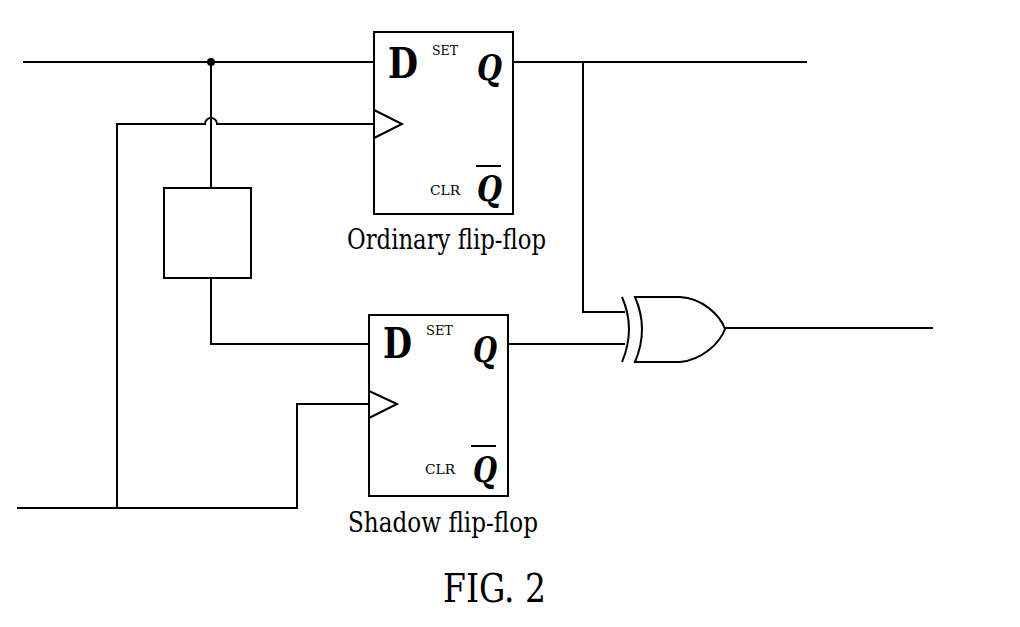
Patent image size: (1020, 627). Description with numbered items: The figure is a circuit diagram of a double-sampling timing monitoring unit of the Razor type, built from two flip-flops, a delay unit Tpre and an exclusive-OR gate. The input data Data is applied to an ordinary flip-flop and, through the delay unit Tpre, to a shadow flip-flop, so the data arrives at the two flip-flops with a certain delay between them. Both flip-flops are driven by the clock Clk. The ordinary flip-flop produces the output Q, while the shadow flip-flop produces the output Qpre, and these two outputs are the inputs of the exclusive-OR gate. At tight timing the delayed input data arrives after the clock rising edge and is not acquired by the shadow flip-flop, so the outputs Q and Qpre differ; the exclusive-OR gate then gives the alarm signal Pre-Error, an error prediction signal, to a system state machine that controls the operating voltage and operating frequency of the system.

The input data Data is at (198, 42).
The clock Clk is at (195, 313).
The flip-flop output Q is at (660, 169).
The delay unit Tpre is at (266, 203).
The shadow flip-flop output Qpre is at (566, 372).
The alarm signal Pre-Error is at (830, 312).